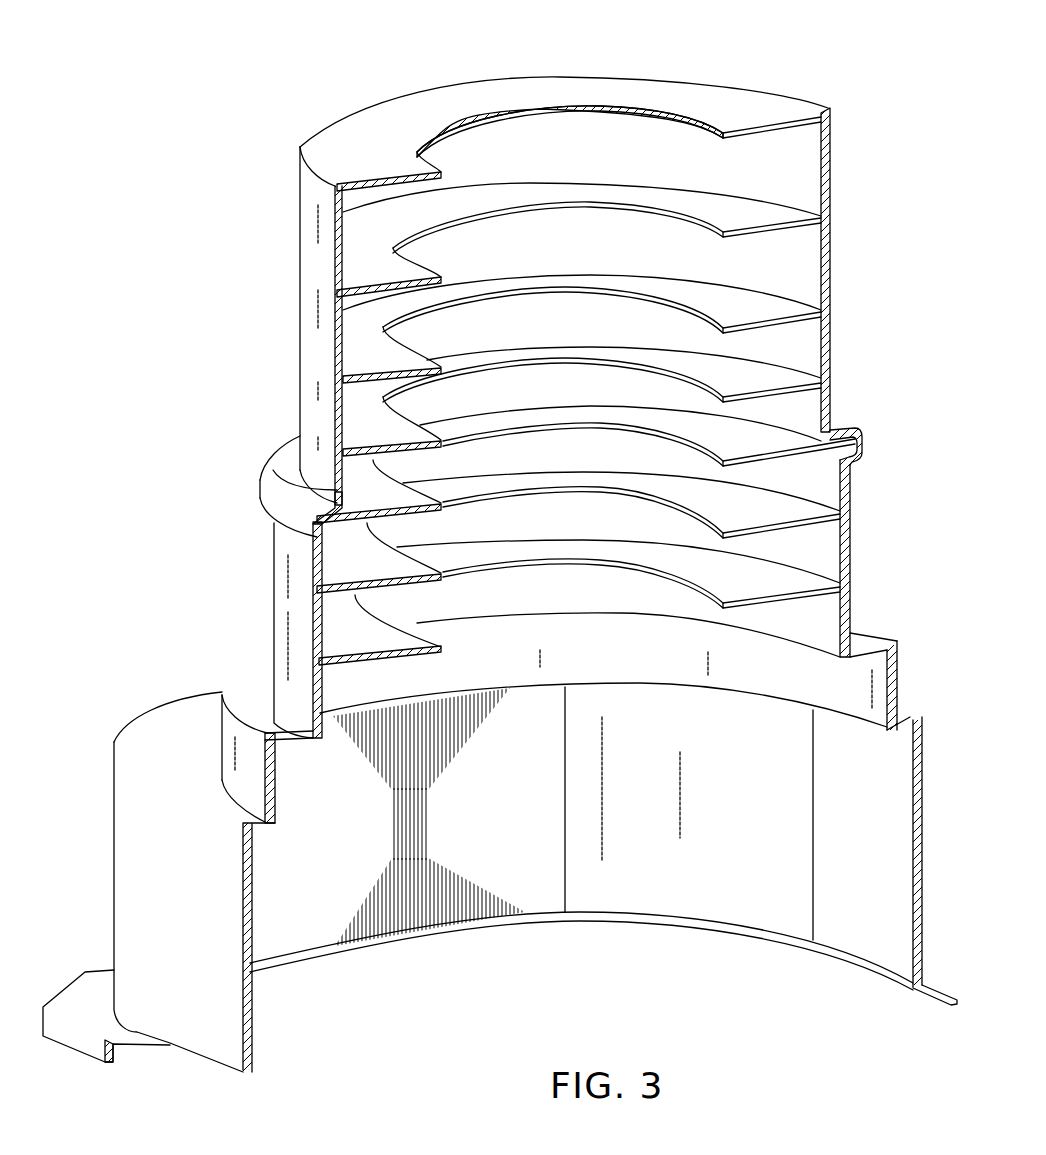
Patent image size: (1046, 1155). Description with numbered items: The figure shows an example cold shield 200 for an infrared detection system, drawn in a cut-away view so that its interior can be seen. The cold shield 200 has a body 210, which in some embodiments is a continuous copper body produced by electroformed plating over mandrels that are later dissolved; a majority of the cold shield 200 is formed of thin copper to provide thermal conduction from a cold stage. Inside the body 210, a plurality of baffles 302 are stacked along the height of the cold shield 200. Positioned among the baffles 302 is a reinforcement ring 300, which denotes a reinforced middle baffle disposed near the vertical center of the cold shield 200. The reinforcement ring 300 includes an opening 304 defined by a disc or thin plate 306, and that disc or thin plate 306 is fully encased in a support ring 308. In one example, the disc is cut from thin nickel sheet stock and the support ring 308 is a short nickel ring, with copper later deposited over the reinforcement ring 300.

The cold shield 200 is at (343, 82).
The body 210 is at (300, 272).
The reinforcement ring 300 is at (268, 456).
The baffles 302 is at (808, 575).
The opening 304 is at (582, 440).
The disc or thin plate 306 is at (781, 433).
The support ring 308 is at (263, 487).